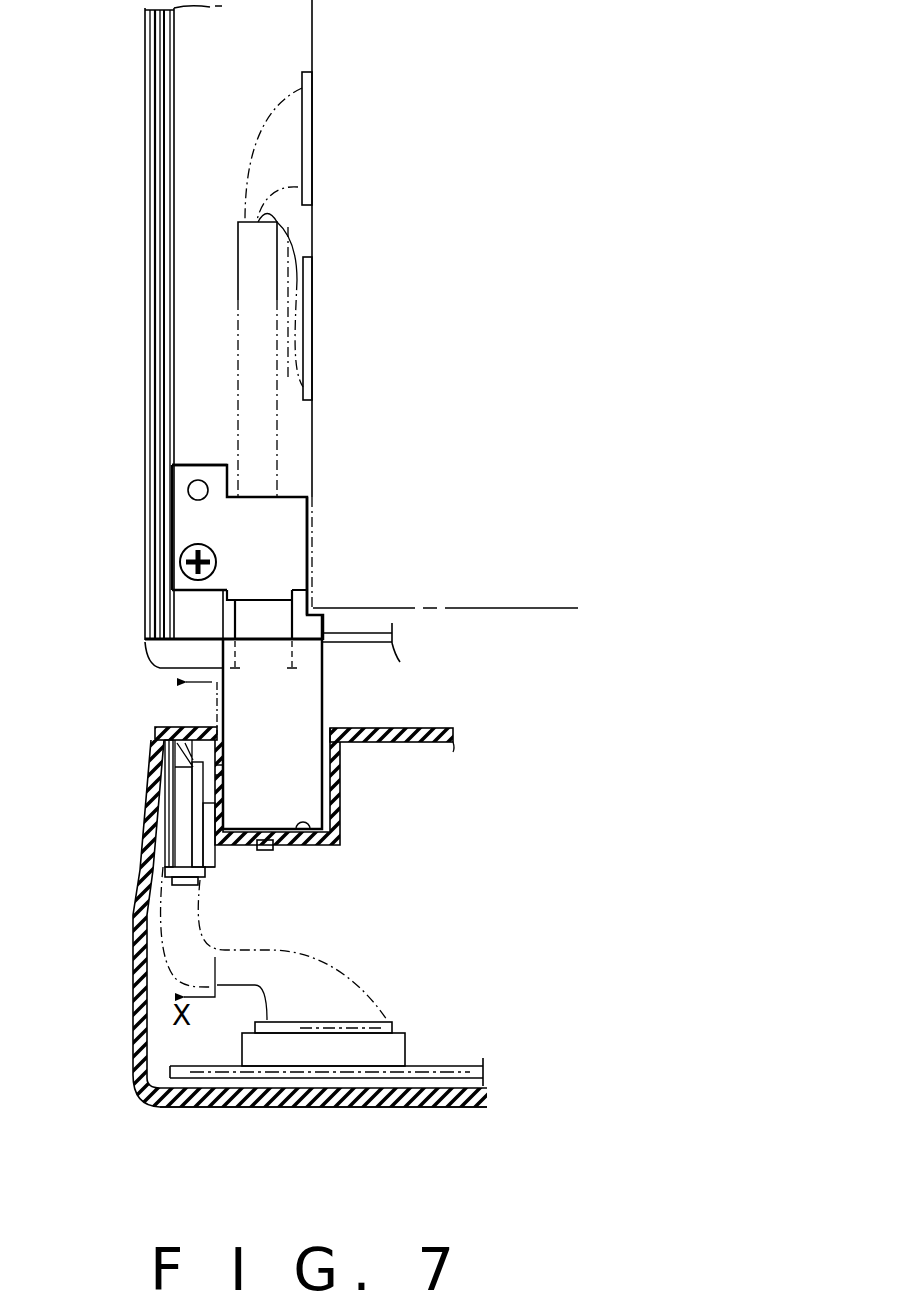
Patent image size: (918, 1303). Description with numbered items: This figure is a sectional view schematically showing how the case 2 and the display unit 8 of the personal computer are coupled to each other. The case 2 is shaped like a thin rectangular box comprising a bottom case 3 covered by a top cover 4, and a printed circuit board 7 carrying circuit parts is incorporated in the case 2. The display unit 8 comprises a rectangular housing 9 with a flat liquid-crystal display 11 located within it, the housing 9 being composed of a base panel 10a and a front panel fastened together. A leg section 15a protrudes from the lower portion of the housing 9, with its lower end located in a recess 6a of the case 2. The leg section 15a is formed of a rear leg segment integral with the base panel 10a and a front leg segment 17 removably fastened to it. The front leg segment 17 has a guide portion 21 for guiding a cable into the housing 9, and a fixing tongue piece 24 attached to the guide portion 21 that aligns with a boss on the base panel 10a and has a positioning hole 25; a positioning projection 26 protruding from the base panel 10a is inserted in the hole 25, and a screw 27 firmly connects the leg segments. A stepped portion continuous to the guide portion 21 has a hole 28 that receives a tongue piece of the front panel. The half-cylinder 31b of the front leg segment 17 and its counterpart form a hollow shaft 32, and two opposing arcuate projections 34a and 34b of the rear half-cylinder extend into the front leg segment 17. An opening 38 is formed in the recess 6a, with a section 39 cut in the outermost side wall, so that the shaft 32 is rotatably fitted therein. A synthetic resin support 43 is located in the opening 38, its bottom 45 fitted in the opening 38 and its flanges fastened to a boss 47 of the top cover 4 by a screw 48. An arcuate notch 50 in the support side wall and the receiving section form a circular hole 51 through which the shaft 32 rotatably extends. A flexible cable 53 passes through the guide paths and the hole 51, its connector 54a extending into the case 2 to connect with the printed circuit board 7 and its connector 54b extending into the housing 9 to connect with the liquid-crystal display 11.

The case 2 is at (133, 1027).
The bottom case 3 is at (430, 1103).
The top cover 4 is at (418, 732).
The recess 6a is at (317, 833).
The printed circuit board 7 is at (443, 1067).
The display unit 8 is at (137, 213).
The housing 9 is at (145, 57).
The base panel 10a is at (187, 352).
The liquid-crystal display 11 is at (318, 28).
The leg section 15a is at (310, 765).
The front leg segment 17 is at (310, 682).
The guide portion 21 is at (283, 555).
The fixing tongue piece 24 is at (185, 520).
The positioning hole 25 is at (200, 466).
The positioning projection 26 is at (190, 490).
The screw 27 is at (182, 568).
The hole 28 is at (262, 630).
The half-cylinder 31b is at (220, 770).
The hollow shaft 32 is at (167, 777).
The arcuate projection 34a is at (223, 742).
The arcuate projection 34b is at (224, 805).
The opening 38 is at (253, 837).
The section 39 is at (160, 737).
The support 43 is at (213, 855).
The bottom 45 is at (230, 855).
The boss 47 is at (162, 753).
The screw 48 is at (180, 880).
The arcuate notch 50 is at (180, 805).
The circular hole 51 is at (180, 828).
The cable 53 is at (270, 448).
The connector 54a is at (387, 1020).
The connector 54b is at (312, 150).